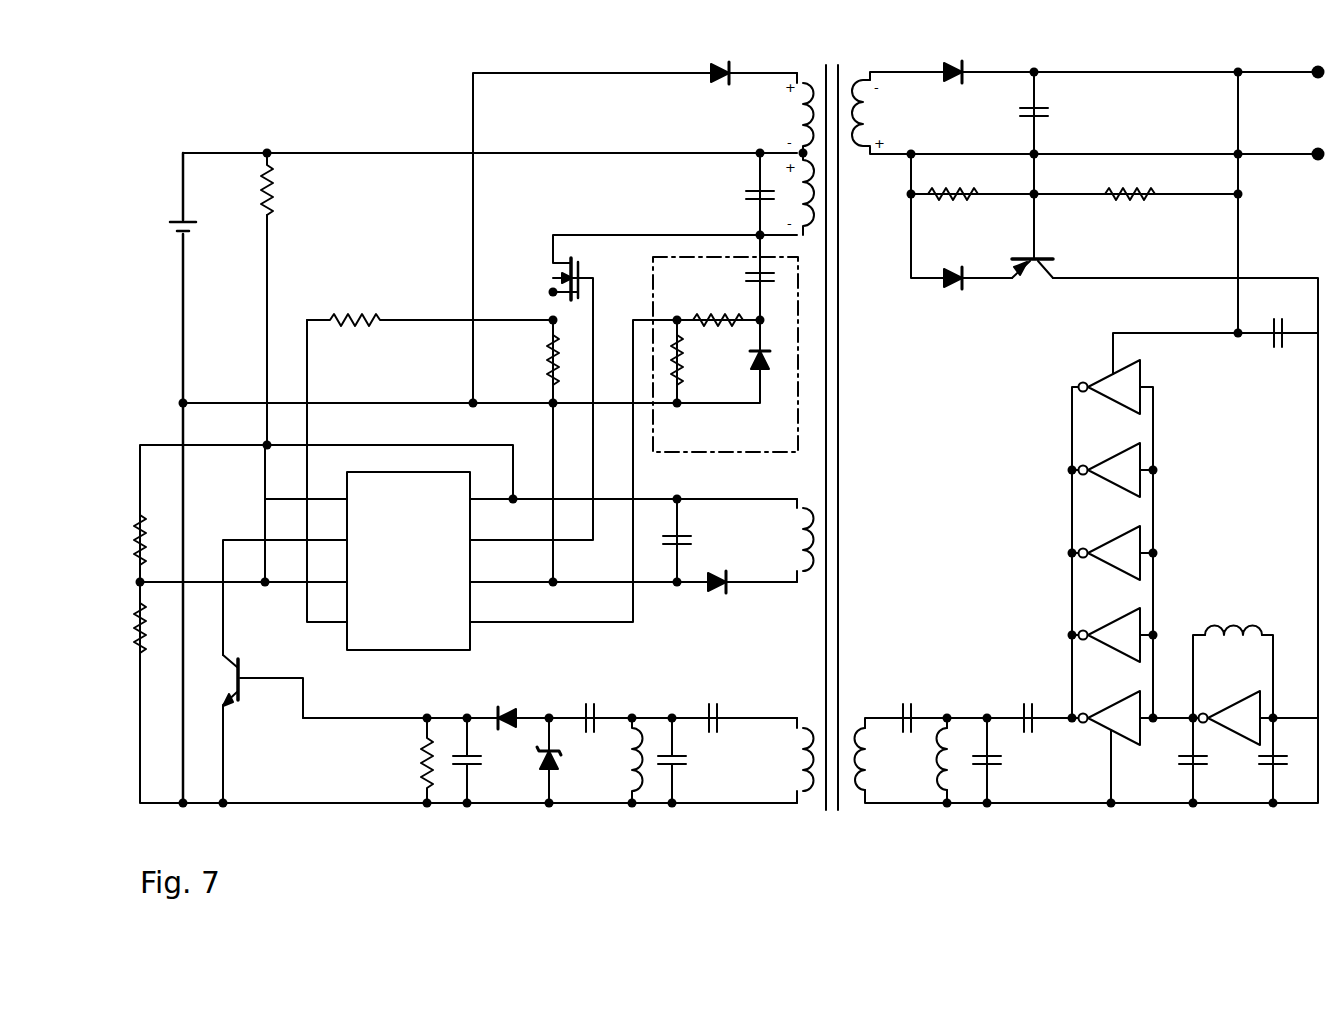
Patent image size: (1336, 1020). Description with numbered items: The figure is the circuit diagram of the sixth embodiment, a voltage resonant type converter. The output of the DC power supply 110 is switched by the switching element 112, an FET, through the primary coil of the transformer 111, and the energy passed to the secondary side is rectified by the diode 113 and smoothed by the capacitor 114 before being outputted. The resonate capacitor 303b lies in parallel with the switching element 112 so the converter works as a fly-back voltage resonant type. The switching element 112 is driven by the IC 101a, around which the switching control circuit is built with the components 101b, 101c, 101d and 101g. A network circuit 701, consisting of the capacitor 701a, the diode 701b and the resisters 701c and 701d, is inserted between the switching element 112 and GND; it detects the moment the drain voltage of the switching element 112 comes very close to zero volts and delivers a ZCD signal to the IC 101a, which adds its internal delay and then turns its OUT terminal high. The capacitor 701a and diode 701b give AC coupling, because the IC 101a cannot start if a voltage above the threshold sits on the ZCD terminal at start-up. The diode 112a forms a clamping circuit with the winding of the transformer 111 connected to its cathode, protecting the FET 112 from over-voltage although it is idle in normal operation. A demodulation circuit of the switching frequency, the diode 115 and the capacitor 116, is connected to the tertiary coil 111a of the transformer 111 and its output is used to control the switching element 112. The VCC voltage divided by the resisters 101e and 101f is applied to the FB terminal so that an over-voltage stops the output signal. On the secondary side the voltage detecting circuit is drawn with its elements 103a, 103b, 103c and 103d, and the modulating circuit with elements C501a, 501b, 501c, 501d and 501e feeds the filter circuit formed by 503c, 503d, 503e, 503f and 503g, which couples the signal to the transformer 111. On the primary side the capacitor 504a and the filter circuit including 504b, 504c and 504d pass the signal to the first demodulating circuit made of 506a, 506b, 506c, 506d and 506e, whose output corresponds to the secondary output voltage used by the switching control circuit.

The DC power supply 110 is at (161, 478).
The IC 101a is at (357, 651).
The starting resistor 101b is at (286, 194).
The resistor 101c is at (546, 360).
The resistor 101d is at (347, 338).
The resistor 101e is at (134, 519).
The resistor 101f is at (134, 622).
The transistor 101g is at (250, 697).
The switching element 112 is at (584, 268).
The diode 112a is at (700, 80).
The resonate capacitor 303b is at (732, 193).
The network circuit 701 is at (801, 442).
The capacitor 701a is at (733, 277).
The diode 701b is at (763, 378).
The resister 701c is at (720, 332).
The resister 701d is at (683, 395).
The transformer 111 is at (847, 324).
The tertiary coil 111a is at (798, 545).
The diode 115 is at (718, 595).
The capacitor 116 is at (708, 542).
The diode 113 is at (956, 90).
The capacitor 114 is at (1052, 113).
The resistor 103a is at (1131, 210).
The resistor 103b is at (956, 207).
The diode 103c is at (952, 298).
The transistor 103d is at (1058, 264).
The capacitor C501a is at (1281, 352).
The capacitor 501b is at (1283, 773).
The capacitor 501c is at (1203, 773).
The inductor 501d is at (1236, 620).
The inverter 501e is at (1068, 507).
The capacitor 503c is at (1031, 705).
The capacitor 503d is at (997, 772).
The capacitor 503e is at (908, 705).
The winding 503f is at (932, 793).
The winding 503g is at (873, 752).
The capacitor 504a is at (792, 762).
The capacitor 504b is at (714, 704).
The capacitor 504c is at (680, 772).
The inductor 504d is at (615, 778).
The capacitor 506a is at (593, 704).
The zener diode 506b is at (541, 780).
The diode 506c is at (503, 702).
The capacitor 506d is at (472, 772).
The resistor 506e is at (413, 778).